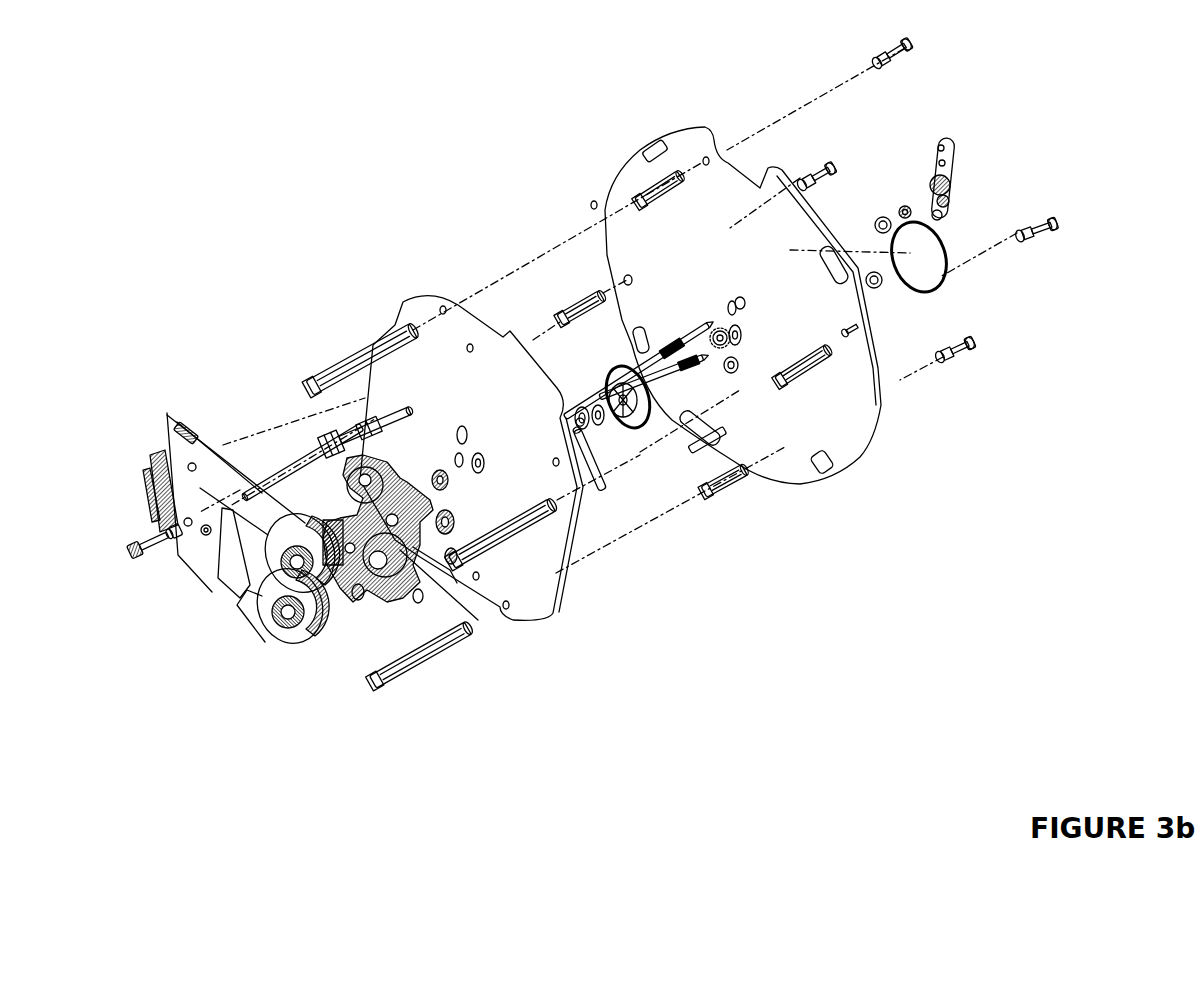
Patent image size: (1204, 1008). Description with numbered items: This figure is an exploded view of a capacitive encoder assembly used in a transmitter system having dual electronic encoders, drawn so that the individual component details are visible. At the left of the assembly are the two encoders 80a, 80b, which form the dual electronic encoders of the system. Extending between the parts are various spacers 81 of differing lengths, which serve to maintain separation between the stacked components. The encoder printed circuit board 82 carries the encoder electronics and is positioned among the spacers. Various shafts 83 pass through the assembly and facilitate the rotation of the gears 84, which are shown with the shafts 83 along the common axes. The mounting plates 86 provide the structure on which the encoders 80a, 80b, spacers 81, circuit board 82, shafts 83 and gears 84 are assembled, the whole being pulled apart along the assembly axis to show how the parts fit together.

The encoder 80a is at (307, 652).
The encoder 80b is at (300, 510).
The spacers 81 is at (812, 370).
The encoder printed circuit board 82 is at (476, 619).
The shafts 83 is at (590, 445).
The gears 84 is at (645, 390).
The mounting plates 86 is at (800, 394).